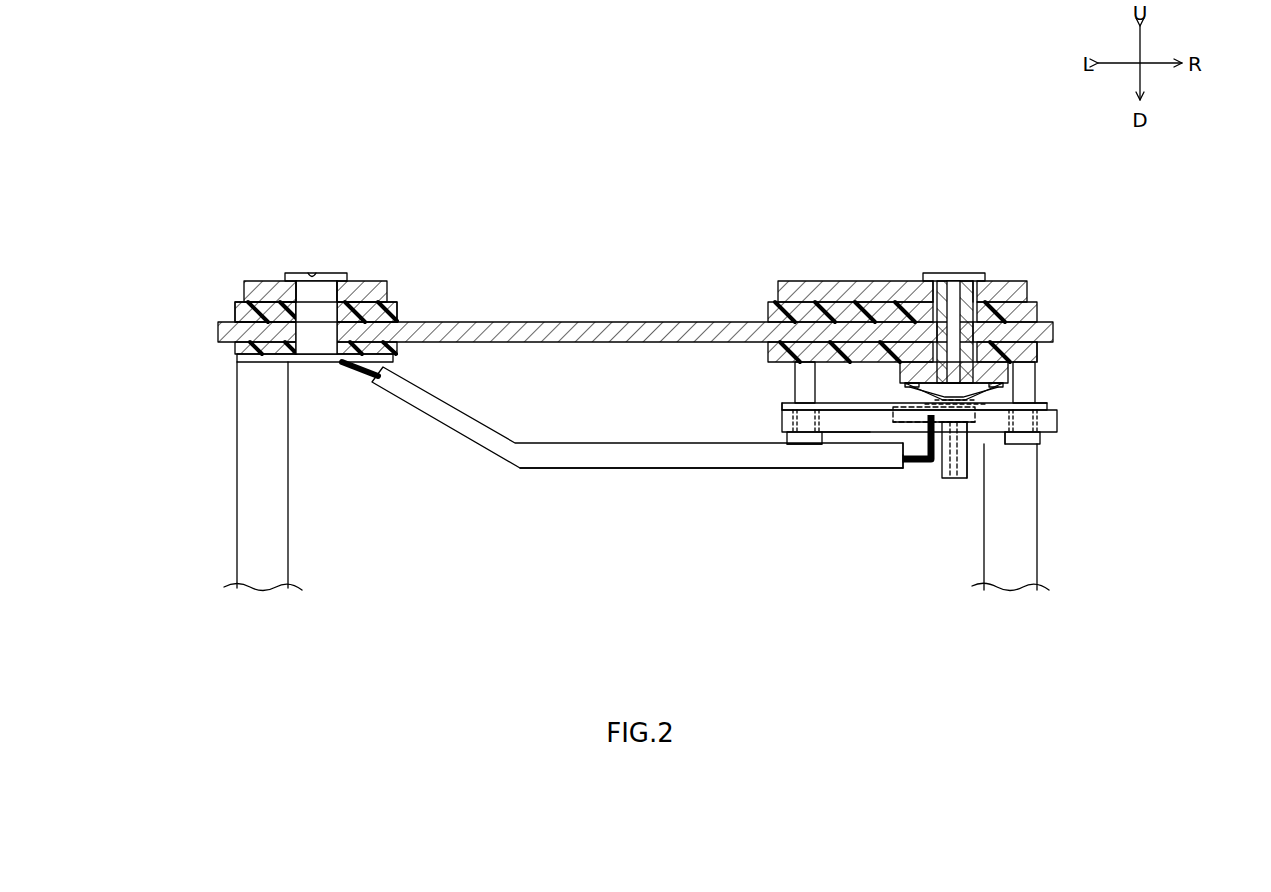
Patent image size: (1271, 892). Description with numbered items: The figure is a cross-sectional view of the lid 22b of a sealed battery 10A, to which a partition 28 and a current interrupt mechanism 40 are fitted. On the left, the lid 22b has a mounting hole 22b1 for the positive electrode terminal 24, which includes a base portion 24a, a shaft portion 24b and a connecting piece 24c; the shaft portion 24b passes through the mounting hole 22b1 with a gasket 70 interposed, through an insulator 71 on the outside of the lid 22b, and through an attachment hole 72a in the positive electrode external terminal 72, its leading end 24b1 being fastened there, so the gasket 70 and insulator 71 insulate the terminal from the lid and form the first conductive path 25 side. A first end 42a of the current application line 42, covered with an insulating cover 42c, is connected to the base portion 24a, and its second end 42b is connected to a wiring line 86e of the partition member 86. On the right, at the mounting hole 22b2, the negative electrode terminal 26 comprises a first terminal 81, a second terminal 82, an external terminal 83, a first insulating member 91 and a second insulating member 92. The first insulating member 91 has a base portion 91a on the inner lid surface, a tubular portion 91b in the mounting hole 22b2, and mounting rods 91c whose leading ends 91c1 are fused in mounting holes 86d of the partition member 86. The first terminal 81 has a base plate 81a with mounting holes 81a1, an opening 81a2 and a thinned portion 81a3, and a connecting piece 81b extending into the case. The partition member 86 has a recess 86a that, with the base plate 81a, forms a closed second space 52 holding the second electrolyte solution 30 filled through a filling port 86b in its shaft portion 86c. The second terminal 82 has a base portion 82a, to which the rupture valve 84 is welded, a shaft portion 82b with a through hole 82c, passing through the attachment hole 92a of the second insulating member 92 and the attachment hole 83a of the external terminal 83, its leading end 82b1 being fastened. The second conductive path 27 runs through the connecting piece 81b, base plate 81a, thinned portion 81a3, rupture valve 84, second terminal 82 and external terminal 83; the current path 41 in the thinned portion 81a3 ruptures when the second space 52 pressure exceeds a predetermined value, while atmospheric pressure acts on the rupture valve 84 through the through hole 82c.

The sealed battery 10A is at (795, 162).
The lid 22b is at (583, 322).
The mounting hole 22b1 is at (358, 310).
The mounting hole 22b2 is at (1015, 312).
The positive electrode terminal 24 is at (255, 223).
The base portion 24a is at (255, 363).
The shaft portion 24b is at (270, 305).
The leading end 24b1 is at (336, 275).
The connecting piece 24c is at (245, 515).
The first conductive path 25 is at (177, 473).
The negative electrode terminal 26 is at (933, 187).
The second conductive path 27 is at (1127, 537).
The partition 28 is at (852, 433).
The second electrolyte solution 30 is at (912, 422).
The current interrupt mechanism 40 is at (910, 548).
The current path 41 is at (1040, 398).
The current application line 42 is at (550, 482).
The first end 42a is at (353, 367).
The second end 42b is at (905, 467).
The insulating cover 42c is at (610, 470).
The second space 52 is at (903, 430).
The gasket 70 is at (230, 350).
The insulator 71 is at (405, 315).
The positive electrode external terminal 72 is at (392, 292).
The attachment hole 72a is at (302, 275).
The first terminal 81 is at (1060, 427).
The base plate 81a is at (1050, 405).
The mounting holes 81a1 is at (793, 400).
The opening 81a2 is at (990, 445).
The thinned portion 81a3 is at (927, 445).
The connecting piece 81b is at (1032, 562).
The second terminal 82 is at (940, 260).
The base portion 82a is at (845, 340).
The shaft portion 82b is at (1053, 325).
The leading end 82b1 is at (970, 277).
The through hole 82c is at (957, 272).
The external terminal 83 is at (788, 280).
The attachment hole 83a is at (940, 267).
The rupture valve 84 is at (1035, 377).
The partition member 86 is at (1053, 410).
The recess 86a is at (893, 410).
The filling port 86b is at (960, 483).
The shaft portion 86c is at (975, 445).
The mounting holes 86d is at (817, 433).
The wiring line 86e is at (935, 400).
The first insulating member 91 is at (1040, 350).
The base portion 91a is at (770, 362).
The tubular portion 91b is at (905, 355).
The mounting rods 91c is at (1037, 368).
The leading ends 91c1 is at (1043, 440).
The second insulating member 92 is at (1043, 307).
The attachment hole 92a is at (1007, 280).